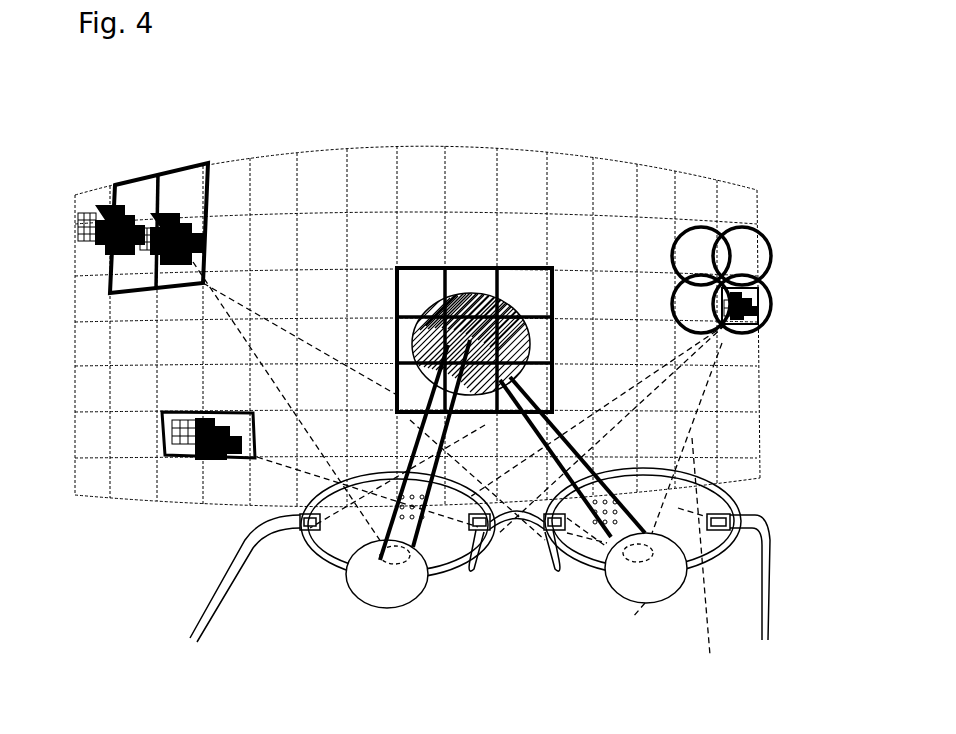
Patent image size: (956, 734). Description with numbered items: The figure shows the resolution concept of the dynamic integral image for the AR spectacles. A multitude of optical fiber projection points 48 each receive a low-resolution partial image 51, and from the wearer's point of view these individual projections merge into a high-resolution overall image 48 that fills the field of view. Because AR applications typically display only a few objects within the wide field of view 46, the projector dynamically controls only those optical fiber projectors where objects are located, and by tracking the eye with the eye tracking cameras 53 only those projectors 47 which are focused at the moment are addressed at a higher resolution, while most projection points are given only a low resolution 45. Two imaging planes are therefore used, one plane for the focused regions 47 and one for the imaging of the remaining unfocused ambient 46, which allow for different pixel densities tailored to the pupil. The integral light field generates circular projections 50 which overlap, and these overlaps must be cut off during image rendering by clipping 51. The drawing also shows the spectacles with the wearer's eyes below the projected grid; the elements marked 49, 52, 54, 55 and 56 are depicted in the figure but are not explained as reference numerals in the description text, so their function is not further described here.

The low resolution projection 45 is at (94, 213).
The unfocused ambient imaging region 46 is at (182, 177).
The focused projectors 47 is at (435, 298).
The optical fiber projection points 48 is at (457, 182).
The first circular region 49 is at (695, 255).
The circular projections 50 is at (723, 257).
The low-resolution partial image 51 is at (750, 328).
The display field boundary 52 is at (180, 503).
The eye tracking cameras 53 is at (732, 513).
The eye 54 is at (365, 578).
The pupil 55 is at (393, 558).
The light rays / gaze direction 56 is at (422, 532).